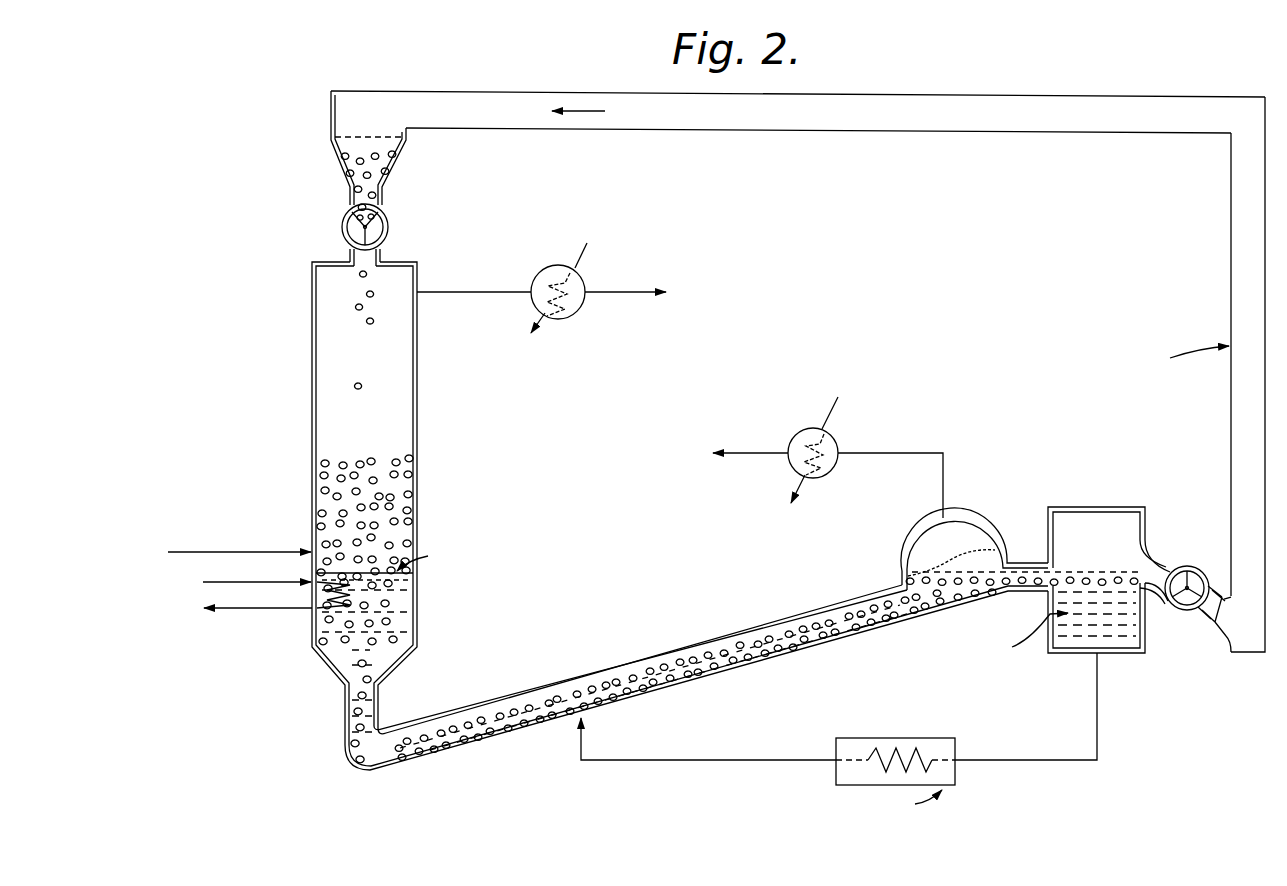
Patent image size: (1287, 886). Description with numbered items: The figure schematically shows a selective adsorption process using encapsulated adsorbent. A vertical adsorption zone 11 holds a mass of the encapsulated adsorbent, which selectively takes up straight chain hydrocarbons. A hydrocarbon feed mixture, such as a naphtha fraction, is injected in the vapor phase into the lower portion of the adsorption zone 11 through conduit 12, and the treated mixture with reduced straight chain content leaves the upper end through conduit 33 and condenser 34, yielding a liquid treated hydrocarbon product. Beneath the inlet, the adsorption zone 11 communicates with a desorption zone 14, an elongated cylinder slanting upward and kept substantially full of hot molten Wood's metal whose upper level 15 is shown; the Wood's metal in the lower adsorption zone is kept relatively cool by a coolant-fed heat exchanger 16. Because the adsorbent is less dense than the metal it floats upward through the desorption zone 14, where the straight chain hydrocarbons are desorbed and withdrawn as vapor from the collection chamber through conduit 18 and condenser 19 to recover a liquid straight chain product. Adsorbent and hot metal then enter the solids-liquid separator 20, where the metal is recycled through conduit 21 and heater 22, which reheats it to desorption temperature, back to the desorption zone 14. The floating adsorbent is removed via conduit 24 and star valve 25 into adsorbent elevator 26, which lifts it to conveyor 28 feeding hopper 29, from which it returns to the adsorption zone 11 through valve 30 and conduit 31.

The adsorption zone 11 is at (418, 412).
The conduit 12 is at (168, 553).
The desorption zone 14 is at (834, 659).
The upper level of the molten Wood's metal 15 is at (498, 606).
The heat exchanger 16 is at (292, 614).
The conduit 18 is at (752, 453).
The condenser 19 is at (836, 434).
The solids-liquid separator 20 is at (1084, 507).
The conduit 21 is at (1040, 760).
The heater 22 is at (886, 740).
The conduit 24 is at (1152, 602).
The star valve 25 is at (1200, 573).
The adsorbent elevator 26 is at (1240, 227).
The adsorbent conveyor 28 is at (908, 96).
The adsorbent hopper 29 is at (397, 185).
The valve 30 is at (380, 228).
The conduit 31 is at (382, 258).
The conduit 33 is at (489, 285).
The condenser 34 is at (586, 280).